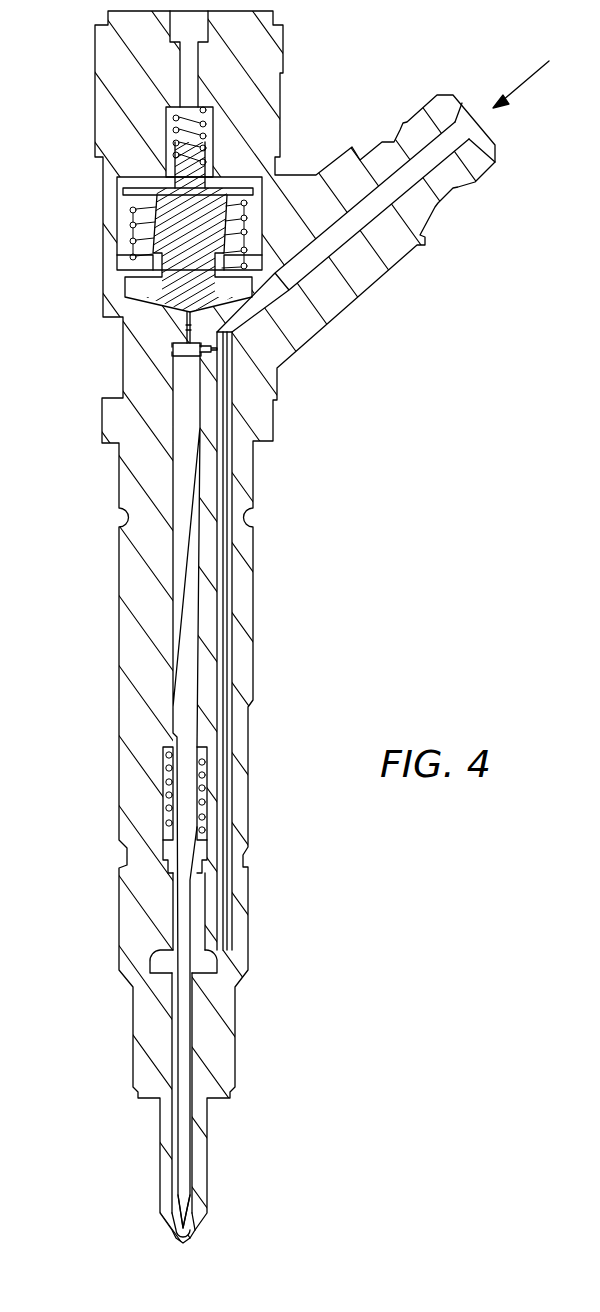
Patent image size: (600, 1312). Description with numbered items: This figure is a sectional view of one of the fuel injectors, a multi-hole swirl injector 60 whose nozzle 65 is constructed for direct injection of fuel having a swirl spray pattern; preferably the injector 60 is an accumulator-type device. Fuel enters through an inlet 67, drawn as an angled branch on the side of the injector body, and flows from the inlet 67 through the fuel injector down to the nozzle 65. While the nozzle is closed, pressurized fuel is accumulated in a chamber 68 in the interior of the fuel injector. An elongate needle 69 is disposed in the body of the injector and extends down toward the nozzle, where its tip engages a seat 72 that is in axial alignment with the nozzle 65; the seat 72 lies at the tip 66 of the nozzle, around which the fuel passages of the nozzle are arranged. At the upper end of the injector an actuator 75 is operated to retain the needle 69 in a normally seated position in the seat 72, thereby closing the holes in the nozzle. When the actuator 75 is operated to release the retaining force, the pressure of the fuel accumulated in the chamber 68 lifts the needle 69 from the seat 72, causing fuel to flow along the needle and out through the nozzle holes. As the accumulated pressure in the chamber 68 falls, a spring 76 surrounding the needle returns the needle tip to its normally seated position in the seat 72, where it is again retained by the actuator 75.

The multi-hole swirl injector 60 is at (276, 579).
The nozzle 65 is at (194, 1226).
The tip of the nozzle 66 is at (185, 1237).
The inlet 67 is at (322, 253).
The chamber 68 is at (203, 964).
The elongate needle 69 is at (183, 702).
The seat 72 is at (183, 1231).
The actuator 75 is at (122, 259).
The spring 76 is at (202, 818).